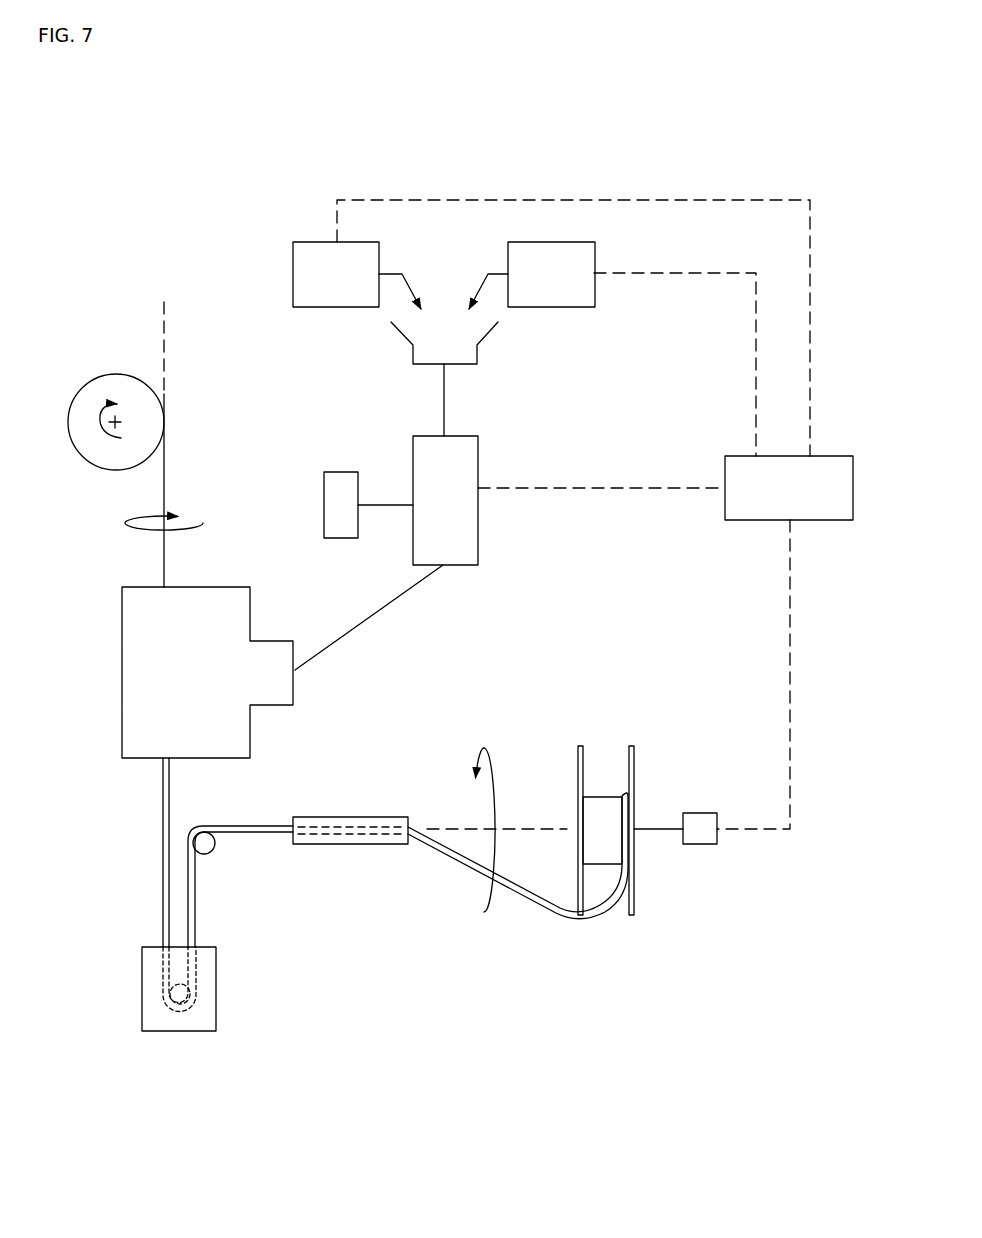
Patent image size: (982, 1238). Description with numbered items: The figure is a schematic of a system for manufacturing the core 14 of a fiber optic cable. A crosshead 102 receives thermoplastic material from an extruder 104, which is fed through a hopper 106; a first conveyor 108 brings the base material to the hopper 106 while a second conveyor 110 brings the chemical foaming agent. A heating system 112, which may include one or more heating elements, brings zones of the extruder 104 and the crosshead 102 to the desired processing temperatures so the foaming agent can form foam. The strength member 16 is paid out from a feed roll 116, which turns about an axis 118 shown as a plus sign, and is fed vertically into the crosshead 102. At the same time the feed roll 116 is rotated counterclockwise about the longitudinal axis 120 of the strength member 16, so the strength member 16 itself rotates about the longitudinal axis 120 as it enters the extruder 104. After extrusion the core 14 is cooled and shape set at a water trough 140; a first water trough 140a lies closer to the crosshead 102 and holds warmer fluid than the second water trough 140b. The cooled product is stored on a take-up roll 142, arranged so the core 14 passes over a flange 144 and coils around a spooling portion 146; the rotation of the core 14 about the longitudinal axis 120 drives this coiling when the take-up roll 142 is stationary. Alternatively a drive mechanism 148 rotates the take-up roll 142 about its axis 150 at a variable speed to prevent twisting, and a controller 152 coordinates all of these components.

The core 14 is at (449, 867).
The strength member 16 is at (166, 480).
The crosshead 102 is at (267, 619).
The extruder 104 is at (491, 451).
The hopper 106 is at (477, 355).
The first conveyor 108 is at (379, 252).
The second conveyor 110 is at (594, 250).
The heating system 112 is at (322, 518).
The feed roll 116 is at (165, 405).
The axis 118 is at (120, 423).
The longitudinal axis 120 is at (164, 328).
The water trough 140 is at (134, 987).
The first water trough 140a is at (218, 1006).
The second water trough 140b is at (330, 844).
The take-up roll 142 is at (637, 762).
The flange 144 is at (578, 758).
The spooling portion 146 is at (593, 793).
The drive mechanism 148 is at (703, 844).
The axis 150 is at (528, 829).
The controller 152 is at (818, 520).